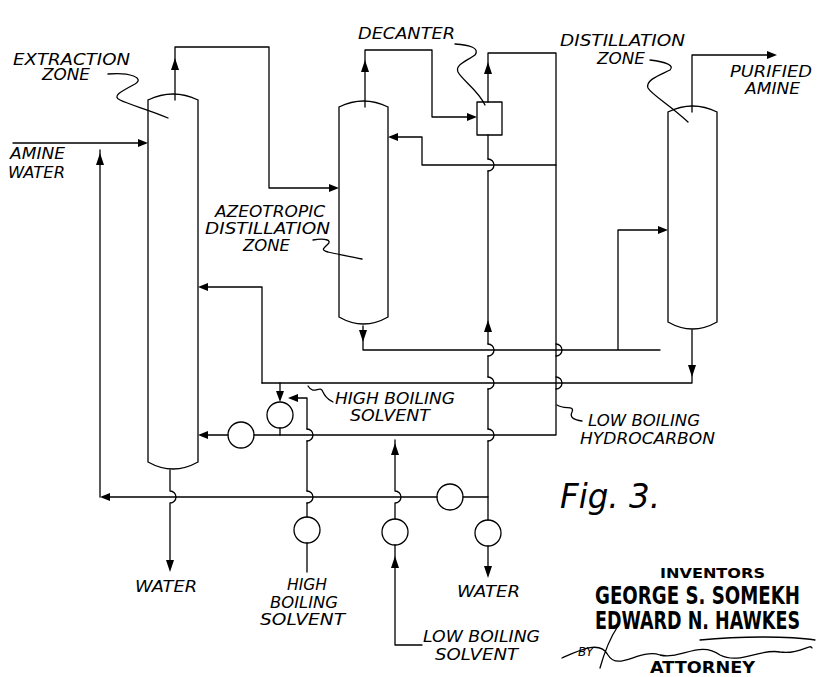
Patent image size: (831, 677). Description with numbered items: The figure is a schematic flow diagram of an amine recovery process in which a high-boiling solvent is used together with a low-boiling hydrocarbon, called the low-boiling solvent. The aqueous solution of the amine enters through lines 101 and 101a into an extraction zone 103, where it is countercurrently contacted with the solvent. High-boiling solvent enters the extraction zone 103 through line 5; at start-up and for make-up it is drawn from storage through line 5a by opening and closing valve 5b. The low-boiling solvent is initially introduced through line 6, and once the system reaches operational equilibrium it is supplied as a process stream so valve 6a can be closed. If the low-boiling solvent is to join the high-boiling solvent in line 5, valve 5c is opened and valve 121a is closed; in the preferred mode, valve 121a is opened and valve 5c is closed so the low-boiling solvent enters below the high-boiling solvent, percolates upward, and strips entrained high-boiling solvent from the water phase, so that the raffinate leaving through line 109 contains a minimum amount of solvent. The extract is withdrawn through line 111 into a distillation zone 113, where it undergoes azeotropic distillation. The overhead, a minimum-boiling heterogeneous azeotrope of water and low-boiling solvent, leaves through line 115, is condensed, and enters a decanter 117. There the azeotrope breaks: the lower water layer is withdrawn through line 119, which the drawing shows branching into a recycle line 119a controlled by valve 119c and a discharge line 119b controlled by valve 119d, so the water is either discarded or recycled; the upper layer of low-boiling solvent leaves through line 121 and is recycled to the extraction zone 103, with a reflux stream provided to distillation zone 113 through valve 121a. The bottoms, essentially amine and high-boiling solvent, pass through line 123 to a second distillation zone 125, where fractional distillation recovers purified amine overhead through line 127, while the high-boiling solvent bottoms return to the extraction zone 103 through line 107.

The line 101 is at (52, 141).
The line 101a is at (121, 148).
The extraction zone 103 is at (189, 173).
The line 111 is at (271, 84).
The distillation zone 113 is at (389, 215).
The line 115 is at (406, 57).
The decanter 117 is at (502, 116).
The valve 121a is at (522, 168).
The line 121 is at (557, 252).
The line 119 is at (487, 263).
The water recycle branch line 119a is at (354, 500).
The water discharge line 119b is at (493, 556).
The valve in water recycle line 119c is at (450, 484).
The valve in water discharge line 119d is at (500, 527).
The line 123 is at (437, 350).
The second distillation zone 125 is at (718, 212).
The line 127 is at (730, 56).
The line 107 is at (636, 383).
The line 5 is at (262, 327).
The line 5a is at (310, 563).
The valve 5b is at (293, 535).
The valve 5c is at (266, 411).
The line 6 is at (397, 593).
The valve 6a is at (408, 535).
The line 109 is at (172, 532).